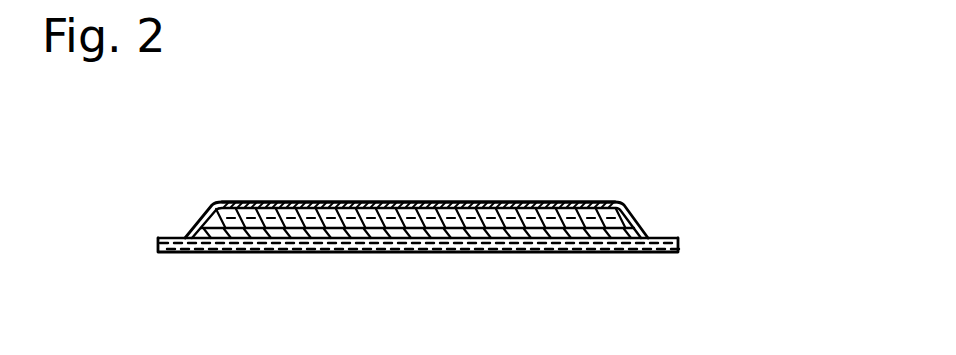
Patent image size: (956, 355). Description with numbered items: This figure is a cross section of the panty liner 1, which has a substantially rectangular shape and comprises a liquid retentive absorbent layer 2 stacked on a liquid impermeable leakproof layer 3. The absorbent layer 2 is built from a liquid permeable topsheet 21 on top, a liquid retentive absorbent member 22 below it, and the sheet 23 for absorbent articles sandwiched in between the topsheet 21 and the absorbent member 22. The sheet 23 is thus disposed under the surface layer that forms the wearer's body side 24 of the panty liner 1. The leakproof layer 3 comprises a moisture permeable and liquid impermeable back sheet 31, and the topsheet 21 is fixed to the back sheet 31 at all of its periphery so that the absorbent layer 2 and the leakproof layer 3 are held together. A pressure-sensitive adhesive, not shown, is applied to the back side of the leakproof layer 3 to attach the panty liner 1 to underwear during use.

The panty liner 1 is at (679, 165).
The absorbent layer 2 is at (775, 170).
The topsheet 21 is at (617, 203).
The absorbent member 22 is at (632, 229).
The sheet 23 is at (627, 213).
The wearer's body side 24 is at (447, 202).
The leakproof layer 3 is at (510, 252).
The back sheet 31 is at (555, 252).